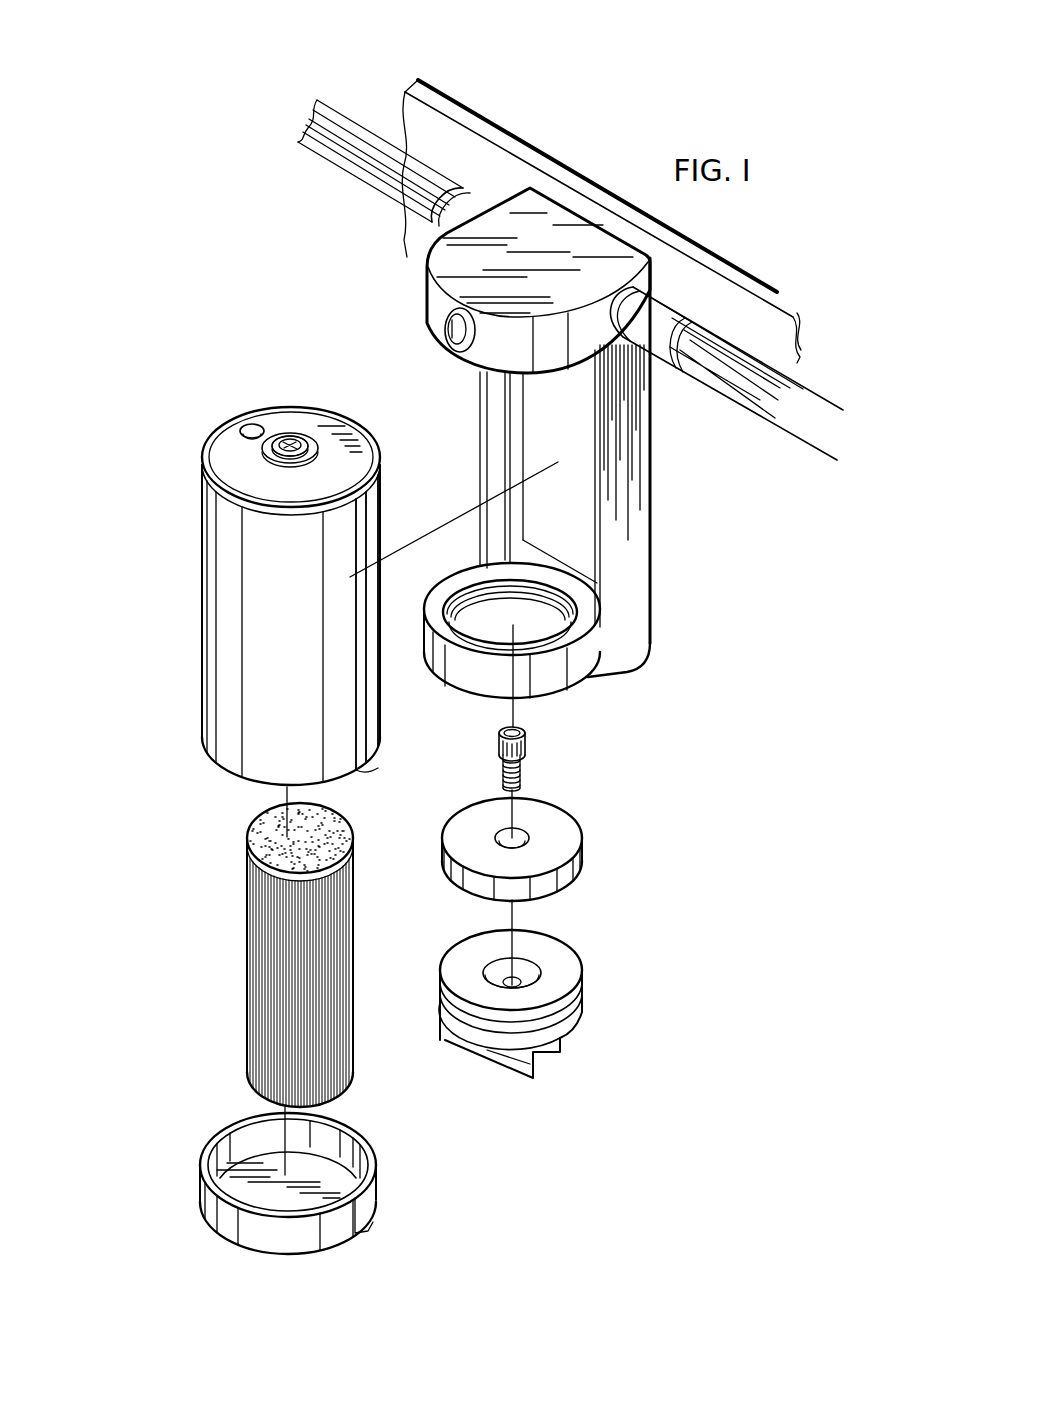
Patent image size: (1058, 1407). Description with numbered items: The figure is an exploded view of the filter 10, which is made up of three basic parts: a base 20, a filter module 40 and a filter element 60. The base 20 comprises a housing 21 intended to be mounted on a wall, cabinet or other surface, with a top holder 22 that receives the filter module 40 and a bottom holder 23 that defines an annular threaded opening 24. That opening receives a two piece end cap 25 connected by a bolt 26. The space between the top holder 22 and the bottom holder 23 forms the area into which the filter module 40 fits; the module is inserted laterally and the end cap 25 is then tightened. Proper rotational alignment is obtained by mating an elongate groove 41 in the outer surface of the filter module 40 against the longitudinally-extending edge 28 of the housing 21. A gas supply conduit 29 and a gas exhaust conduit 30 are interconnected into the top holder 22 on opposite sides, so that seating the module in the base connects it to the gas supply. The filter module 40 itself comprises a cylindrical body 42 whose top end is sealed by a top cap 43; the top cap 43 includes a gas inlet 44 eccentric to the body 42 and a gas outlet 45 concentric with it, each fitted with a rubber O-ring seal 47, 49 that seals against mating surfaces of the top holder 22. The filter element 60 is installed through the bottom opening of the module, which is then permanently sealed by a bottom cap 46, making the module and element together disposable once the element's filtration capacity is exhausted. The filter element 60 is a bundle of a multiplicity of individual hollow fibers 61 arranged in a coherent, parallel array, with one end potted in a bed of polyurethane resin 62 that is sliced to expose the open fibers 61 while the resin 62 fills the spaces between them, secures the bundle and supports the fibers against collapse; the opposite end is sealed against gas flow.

The filter 10 is at (598, 482).
The base 20 is at (481, 207).
The housing 21 is at (585, 482).
The top holder 22 is at (528, 200).
The bottom holder 23 is at (598, 662).
The annular threaded opening 24 is at (568, 605).
The two piece end cap 25 is at (583, 987).
The bolt 26 is at (527, 743).
The longitudinally-extending edge 28 is at (605, 457).
The gas supply conduit 29 is at (323, 112).
The gas exhaust conduit 30 is at (733, 372).
The filter module 40 is at (258, 553).
The elongate groove 41 is at (365, 528).
The cylindrical body 42 is at (232, 597).
The top cap 43 is at (291, 420).
The gas inlet 44 is at (250, 424).
The gas outlet 45 is at (447, 355).
The bottom cap 46 is at (243, 1143).
The rubber O-ring seal 47 is at (222, 445).
The rubber O-ring seal 49 is at (300, 437).
The filter element 60 is at (265, 944).
The fibers 61 is at (335, 831).
The polyurethane resin 62 is at (247, 850).